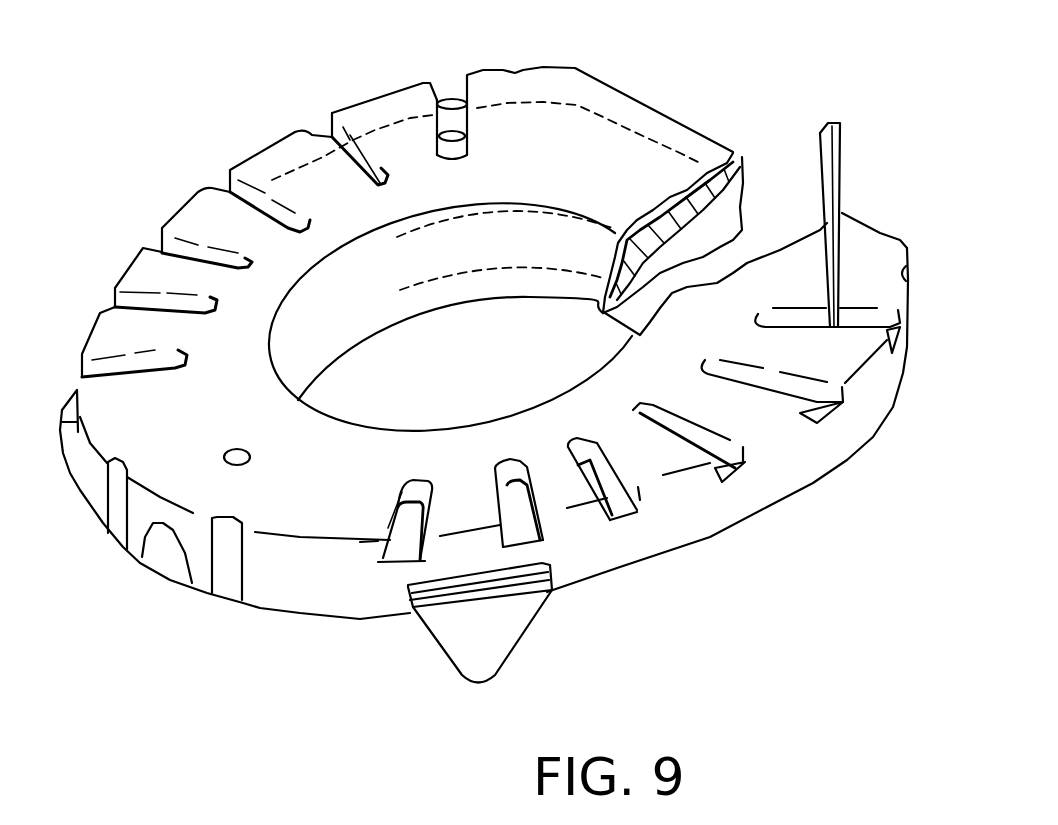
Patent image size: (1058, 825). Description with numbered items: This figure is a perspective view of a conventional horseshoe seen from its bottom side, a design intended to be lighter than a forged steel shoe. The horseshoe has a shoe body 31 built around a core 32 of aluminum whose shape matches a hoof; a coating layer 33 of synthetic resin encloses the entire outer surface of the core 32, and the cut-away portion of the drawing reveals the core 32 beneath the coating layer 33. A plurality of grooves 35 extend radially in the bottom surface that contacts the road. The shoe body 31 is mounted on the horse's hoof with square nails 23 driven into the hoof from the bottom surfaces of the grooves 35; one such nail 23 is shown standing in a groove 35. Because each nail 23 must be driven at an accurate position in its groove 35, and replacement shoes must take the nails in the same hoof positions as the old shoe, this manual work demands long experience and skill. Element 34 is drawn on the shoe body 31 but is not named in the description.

The square nail 23 is at (843, 143).
The shoe body 31 is at (273, 127).
The core 32 is at (737, 152).
The coating layer 33 is at (608, 107).
The projection 34 is at (760, 413).
The grooves 35 is at (637, 510).